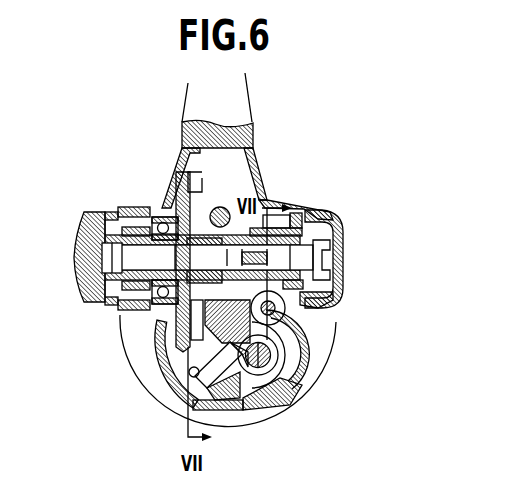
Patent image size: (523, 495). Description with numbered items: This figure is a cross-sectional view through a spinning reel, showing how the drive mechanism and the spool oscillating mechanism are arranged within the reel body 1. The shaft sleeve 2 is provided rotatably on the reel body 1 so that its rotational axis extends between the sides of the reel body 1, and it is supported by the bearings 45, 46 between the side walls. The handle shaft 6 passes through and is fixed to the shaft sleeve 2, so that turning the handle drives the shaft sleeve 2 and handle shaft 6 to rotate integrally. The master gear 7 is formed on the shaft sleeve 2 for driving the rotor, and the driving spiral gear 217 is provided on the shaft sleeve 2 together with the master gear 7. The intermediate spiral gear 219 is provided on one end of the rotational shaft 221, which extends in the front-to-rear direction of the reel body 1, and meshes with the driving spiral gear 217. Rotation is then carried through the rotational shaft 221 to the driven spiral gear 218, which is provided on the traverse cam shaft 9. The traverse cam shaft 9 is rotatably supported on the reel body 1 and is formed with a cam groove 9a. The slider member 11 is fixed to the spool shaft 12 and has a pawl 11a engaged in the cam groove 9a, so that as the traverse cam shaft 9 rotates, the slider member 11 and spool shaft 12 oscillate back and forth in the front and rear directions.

The reel body 1 is at (132, 323).
The shaft sleeve 2 is at (335, 217).
The handle shaft 6 is at (340, 260).
The master gear 7 is at (186, 350).
The traverse cam shaft 9 is at (262, 376).
The cam groove 9a is at (271, 360).
The slider member 11 is at (240, 397).
The pawl 11a is at (228, 365).
The spool shaft 12 is at (190, 342).
The bearing 45 is at (160, 203).
The bearing 46 is at (330, 300).
The driving spiral gear 217 is at (277, 214).
The driven spiral gear 218 is at (283, 350).
The intermediate spiral gear 219 is at (298, 347).
The rotational shaft 221 is at (295, 312).